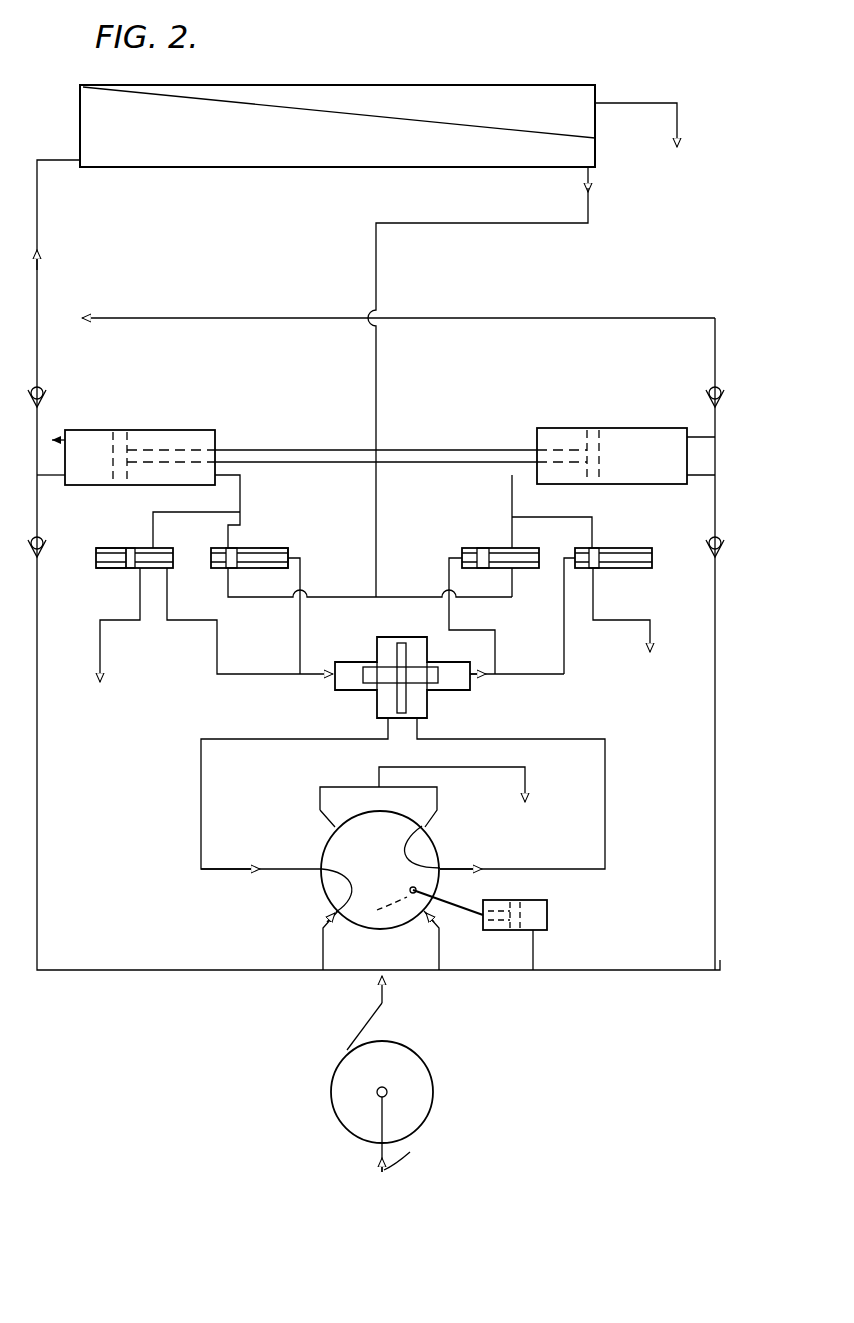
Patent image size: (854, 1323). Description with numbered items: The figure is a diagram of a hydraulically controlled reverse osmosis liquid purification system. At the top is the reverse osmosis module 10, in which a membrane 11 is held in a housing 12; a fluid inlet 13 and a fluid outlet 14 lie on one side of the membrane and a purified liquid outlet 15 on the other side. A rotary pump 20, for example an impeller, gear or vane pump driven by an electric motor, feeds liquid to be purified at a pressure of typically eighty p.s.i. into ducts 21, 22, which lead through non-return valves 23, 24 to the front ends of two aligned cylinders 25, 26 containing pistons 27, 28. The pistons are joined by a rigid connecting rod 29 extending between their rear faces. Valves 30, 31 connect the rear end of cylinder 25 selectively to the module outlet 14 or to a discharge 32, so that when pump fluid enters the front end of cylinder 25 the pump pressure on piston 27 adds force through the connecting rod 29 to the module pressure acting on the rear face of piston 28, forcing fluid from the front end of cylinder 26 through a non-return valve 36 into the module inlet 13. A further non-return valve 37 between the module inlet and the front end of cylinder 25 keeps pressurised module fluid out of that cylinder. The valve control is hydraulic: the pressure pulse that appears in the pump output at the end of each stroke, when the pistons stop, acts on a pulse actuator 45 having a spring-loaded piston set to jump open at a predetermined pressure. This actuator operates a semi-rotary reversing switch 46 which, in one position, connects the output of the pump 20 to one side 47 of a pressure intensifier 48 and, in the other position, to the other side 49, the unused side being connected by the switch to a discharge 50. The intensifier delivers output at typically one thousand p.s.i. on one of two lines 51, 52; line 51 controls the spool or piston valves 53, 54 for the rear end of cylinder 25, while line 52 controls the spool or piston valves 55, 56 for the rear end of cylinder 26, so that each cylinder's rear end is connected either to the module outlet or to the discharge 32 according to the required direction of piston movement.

The reverse osmosis liquid purification module 10 is at (450, 75).
The membrane 11 is at (333, 108).
The housing 12 is at (266, 85).
The fluid inlet 13 is at (46, 158).
The fluid outlet 14 is at (590, 208).
The purified liquid outlet 15 is at (640, 103).
The rotary pump 20 is at (432, 1074).
The duct 21 is at (137, 968).
The duct 22 is at (608, 968).
The non-return valve 23 is at (44, 558).
The non-return valve 24 is at (708, 543).
The cylinder 25 is at (180, 430).
The cylinder 26 is at (638, 428).
The piston 27 is at (126, 430).
The piston 28 is at (588, 428).
The connecting rod 29 is at (430, 450).
The valve 30 is at (236, 548).
The valve 31 is at (160, 548).
The discharge 32 is at (100, 650).
The non-return valve 36 is at (708, 393).
The non-return valve 37 is at (46, 398).
The pulse actuator 45 is at (548, 910).
The semi-rotary reversing switch 46 is at (300, 900).
The side of pressure intensifier 47 is at (380, 706).
The pressure intensifier 48 is at (390, 630).
The side of pressure intensifier 49 is at (420, 705).
The discharge 50 is at (527, 772).
The line 51 is at (325, 672).
The line 52 is at (518, 676).
The spool or piston valve 53 is at (128, 548).
The spool or piston valve 54 is at (280, 548).
The spool or piston valve 55 is at (482, 548).
The spool or piston valve 56 is at (600, 548).